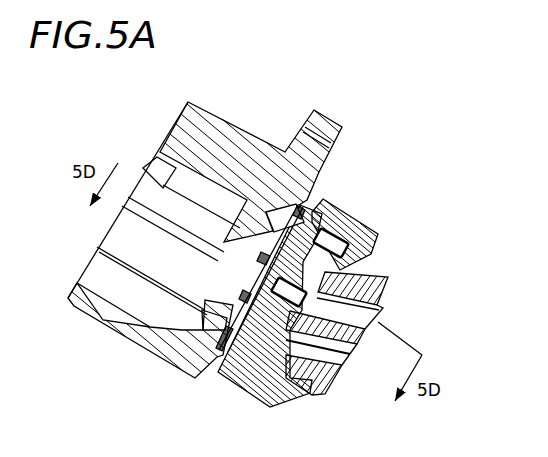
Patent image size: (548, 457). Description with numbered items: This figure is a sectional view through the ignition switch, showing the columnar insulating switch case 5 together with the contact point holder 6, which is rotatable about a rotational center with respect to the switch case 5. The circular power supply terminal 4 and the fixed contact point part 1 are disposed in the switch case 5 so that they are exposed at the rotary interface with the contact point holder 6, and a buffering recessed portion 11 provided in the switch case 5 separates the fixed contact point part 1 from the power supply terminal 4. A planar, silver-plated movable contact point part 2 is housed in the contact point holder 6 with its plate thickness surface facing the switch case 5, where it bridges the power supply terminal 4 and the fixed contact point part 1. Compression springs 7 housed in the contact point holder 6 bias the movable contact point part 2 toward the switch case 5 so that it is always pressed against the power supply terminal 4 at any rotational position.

The fixed contact point part 1 is at (302, 212).
The movable contact point part 2 is at (343, 262).
The power supply terminal 4 is at (247, 267).
The switch case 5 is at (215, 138).
The contact point holder 6 is at (389, 277).
The compression spring 7 is at (345, 232).
The buffering recessed portion 11 is at (270, 207).